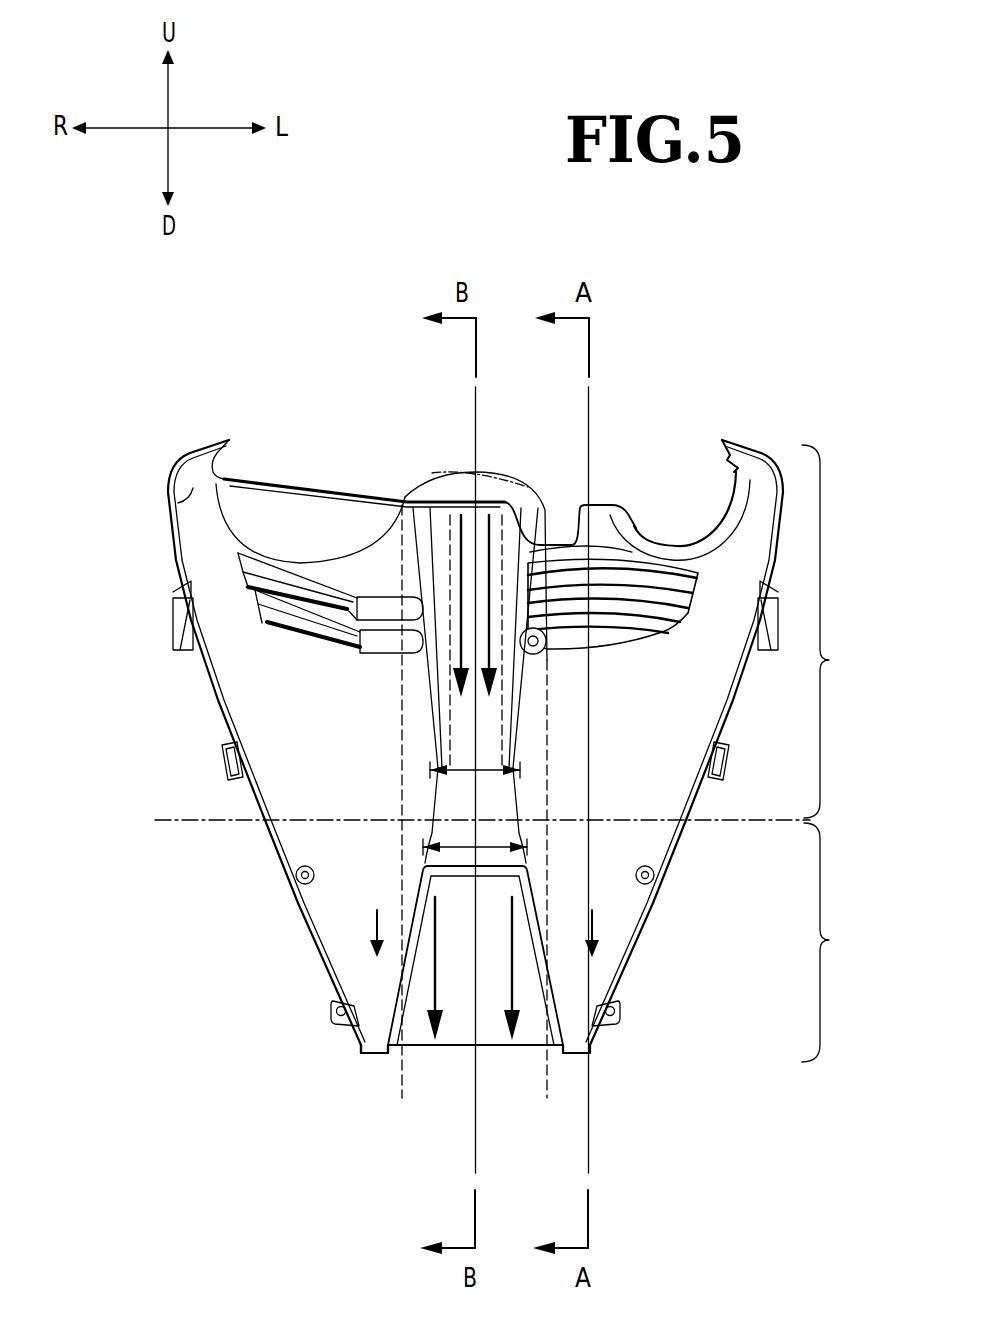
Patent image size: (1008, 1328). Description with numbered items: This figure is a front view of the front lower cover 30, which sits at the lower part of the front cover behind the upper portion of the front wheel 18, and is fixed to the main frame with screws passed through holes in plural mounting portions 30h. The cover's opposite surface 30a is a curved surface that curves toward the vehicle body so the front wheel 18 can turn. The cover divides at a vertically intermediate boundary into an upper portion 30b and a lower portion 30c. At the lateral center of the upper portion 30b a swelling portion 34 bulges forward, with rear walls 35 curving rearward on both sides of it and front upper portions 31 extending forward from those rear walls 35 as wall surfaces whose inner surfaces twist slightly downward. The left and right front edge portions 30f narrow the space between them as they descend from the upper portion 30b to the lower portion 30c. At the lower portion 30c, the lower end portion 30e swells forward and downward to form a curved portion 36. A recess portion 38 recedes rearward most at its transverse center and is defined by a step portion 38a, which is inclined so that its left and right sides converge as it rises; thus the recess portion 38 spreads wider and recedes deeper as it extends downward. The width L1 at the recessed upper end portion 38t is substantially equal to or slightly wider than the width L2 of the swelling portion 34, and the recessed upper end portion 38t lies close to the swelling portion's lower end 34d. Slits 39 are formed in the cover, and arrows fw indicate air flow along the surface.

The front wheel 18 is at (432, 473).
The front lower cover 30 is at (142, 464).
The opposite surface 30a is at (288, 686).
The upper portion 30b is at (841, 631).
The lower portion 30c is at (841, 942).
The lower end portion 30e is at (370, 1062).
The front edge portion 30f is at (220, 723).
The mounting portion 30h is at (208, 445).
The front upper portion 31 is at (173, 502).
The swelling portion 34 is at (458, 523).
The lower end of swelling portion 34d is at (473, 772).
The rear wall 35 is at (350, 505).
The curved portion 36 is at (500, 990).
The recess portion 38 is at (418, 1047).
The step portion 38a is at (553, 996).
The recessed upper end portion 38t is at (523, 864).
The slit 39 is at (320, 588).
The air flow fw is at (518, 525).
The width of recessed upper end portion L1 is at (478, 846).
The width of swelling portion L2 is at (478, 768).